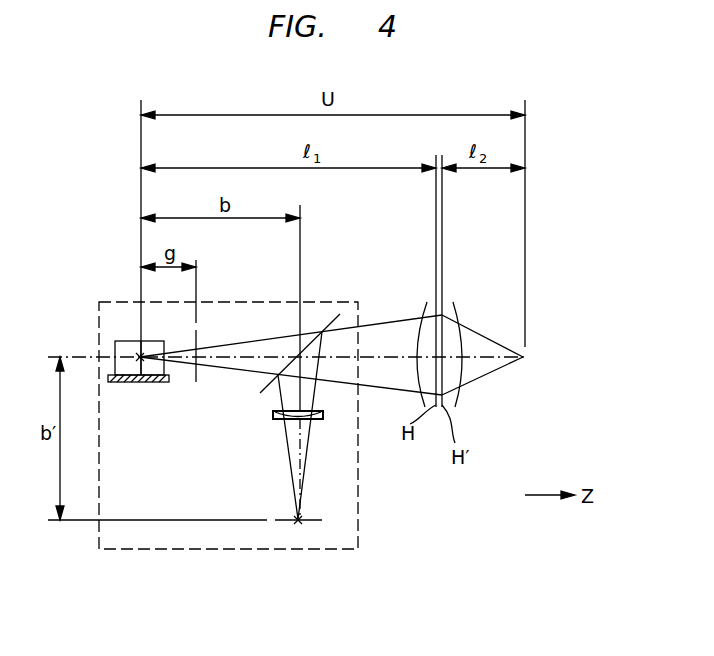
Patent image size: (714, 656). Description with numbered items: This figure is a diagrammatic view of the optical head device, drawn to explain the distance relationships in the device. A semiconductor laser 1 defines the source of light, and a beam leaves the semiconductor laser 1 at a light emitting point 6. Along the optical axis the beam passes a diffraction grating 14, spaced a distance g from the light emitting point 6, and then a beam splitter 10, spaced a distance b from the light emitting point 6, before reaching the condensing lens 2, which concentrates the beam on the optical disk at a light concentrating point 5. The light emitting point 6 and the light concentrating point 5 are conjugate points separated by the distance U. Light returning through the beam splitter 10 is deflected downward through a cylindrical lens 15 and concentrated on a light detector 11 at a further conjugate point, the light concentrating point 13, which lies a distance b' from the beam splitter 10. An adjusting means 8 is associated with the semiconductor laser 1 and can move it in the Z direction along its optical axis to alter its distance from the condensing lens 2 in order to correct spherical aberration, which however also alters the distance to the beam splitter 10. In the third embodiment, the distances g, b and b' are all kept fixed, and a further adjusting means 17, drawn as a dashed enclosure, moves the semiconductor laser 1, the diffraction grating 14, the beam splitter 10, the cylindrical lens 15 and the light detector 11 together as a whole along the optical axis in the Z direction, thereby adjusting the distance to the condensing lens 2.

The semiconductor laser 1 is at (122, 347).
The condensing lens 2 is at (458, 400).
The light concentrating point 5 is at (524, 358).
The light emitting point 6 is at (143, 380).
The adjusting means 8 is at (123, 382).
The beam splitter 10 is at (273, 387).
The light detector 11 is at (310, 522).
The light concentrating point 13 is at (297, 525).
The diffraction grating 14 is at (196, 380).
The cylindrical lens 15 is at (323, 416).
The adjusting means 17 is at (155, 549).